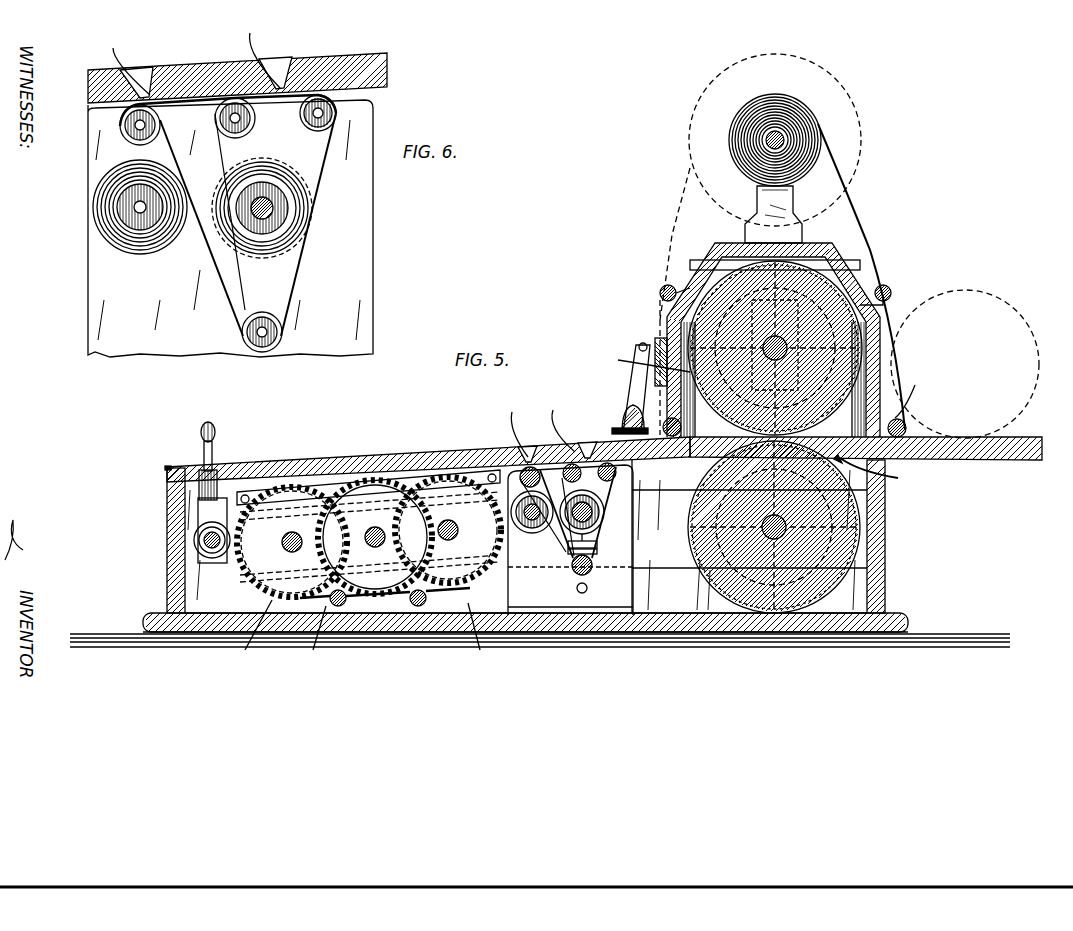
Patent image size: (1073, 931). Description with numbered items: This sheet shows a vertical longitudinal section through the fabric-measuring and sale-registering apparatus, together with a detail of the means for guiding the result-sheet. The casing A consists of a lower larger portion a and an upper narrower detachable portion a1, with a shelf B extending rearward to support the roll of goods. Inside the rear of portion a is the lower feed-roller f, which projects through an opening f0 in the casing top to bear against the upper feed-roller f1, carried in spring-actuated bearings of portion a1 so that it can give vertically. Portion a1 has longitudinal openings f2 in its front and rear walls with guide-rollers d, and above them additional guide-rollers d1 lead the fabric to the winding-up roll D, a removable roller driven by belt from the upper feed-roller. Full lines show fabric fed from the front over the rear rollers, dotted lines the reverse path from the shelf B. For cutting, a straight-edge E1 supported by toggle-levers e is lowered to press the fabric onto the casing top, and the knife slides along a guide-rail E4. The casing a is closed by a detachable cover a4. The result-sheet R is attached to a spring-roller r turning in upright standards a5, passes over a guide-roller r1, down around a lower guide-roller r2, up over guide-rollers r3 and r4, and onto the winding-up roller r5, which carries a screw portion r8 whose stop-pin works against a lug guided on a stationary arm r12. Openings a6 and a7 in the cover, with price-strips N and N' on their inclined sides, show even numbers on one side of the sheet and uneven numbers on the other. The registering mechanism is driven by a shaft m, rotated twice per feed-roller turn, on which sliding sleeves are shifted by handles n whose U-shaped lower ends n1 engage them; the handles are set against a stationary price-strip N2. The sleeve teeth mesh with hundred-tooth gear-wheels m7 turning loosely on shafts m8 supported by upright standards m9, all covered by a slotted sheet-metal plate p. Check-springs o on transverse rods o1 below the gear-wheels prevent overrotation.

In FIG. 5, the lower casing portion a is at (524, 546).
In FIG. 5, the upper casing portion a1 is at (773, 340).
In FIG. 6, the detachable cover a4 is at (252, 78).
In FIG. 5, the detachable cover a4 is at (420, 462).
In FIG. 6, the upright standards a5 is at (244, 228).
In FIG. 5, the upright standards a5 is at (570, 540).
In FIG. 6, the first reading opening a6 is at (143, 72).
In FIG. 5, the first reading opening a6 is at (527, 448).
In FIG. 6, the second reading opening a7 is at (278, 70).
In FIG. 5, the second reading opening a7 is at (586, 445).
In FIG. 5, the casing A is at (520, 636).
In FIG. 5, the shelf B is at (948, 456).
In FIG. 5, the winding-up roll D is at (800, 142).
In FIG. 5, the guide-rollers d is at (952, 428).
In FIG. 5, the additional guide-rollers d1 is at (659, 294).
In FIG. 5, the toggle-levers e is at (665, 338).
In FIG. 5, the straight-edge E1 is at (630, 430).
In FIG. 5, the guide-rail E4 is at (652, 346).
In FIG. 5, the lower feed-roller f is at (852, 513).
In FIG. 5, the opening in casing top f0 is at (873, 472).
In FIG. 5, the upper feed-roller f1 is at (862, 349).
In FIG. 5, the longitudinal openings f2 is at (765, 381).
In FIG. 5, the rotary shaft m is at (205, 540).
In FIG. 5, the gear-wheels m7 is at (369, 537).
In FIG. 5, the gear-wheel shaft m8 is at (384, 531).
In FIG. 5, the upright standards m9 is at (350, 636).
In FIG. 5, the handle n is at (216, 433).
In FIG. 5, the U-shaped lower end n1 is at (205, 512).
In FIG. 6, the price-strip N is at (121, 65).
In FIG. 5, the price-strip N is at (514, 425).
In FIG. 6, the price-strip N' is at (256, 51).
In FIG. 5, the price-strip N' is at (561, 421).
In FIG. 5, the stationary price-strip N2 is at (166, 470).
In FIG. 5, the check-springs o is at (385, 601).
In FIG. 5, the transverse rods o1 is at (381, 627).
In FIG. 5, the sheet-metal plate p is at (242, 492).
In FIG. 6, the spring-roller r is at (128, 207).
In FIG. 5, the spring-roller r is at (531, 522).
In FIG. 6, the guide-roller r1 is at (135, 125).
In FIG. 5, the guide-roller r1 is at (522, 470).
In FIG. 6, the lower guide-roller r2 is at (277, 334).
In FIG. 5, the lower guide-roller r2 is at (582, 565).
In FIG. 6, the upper guide-roller r3 is at (338, 114).
In FIG. 5, the upper guide-roller r3 is at (618, 471).
In FIG. 6, the second guide-roller r4 is at (250, 122).
In FIG. 5, the second guide-roller r4 is at (575, 480).
In FIG. 6, the winding-up roller r5 is at (270, 226).
In FIG. 5, the winding-up roller r5 is at (605, 512).
In FIG. 5, the screw portion r8 is at (598, 544).
In FIG. 5, the stationary arm r12 is at (598, 552).
In FIG. 6, the result-sheet R is at (105, 161).
In FIG. 5, the result-sheet R is at (568, 512).